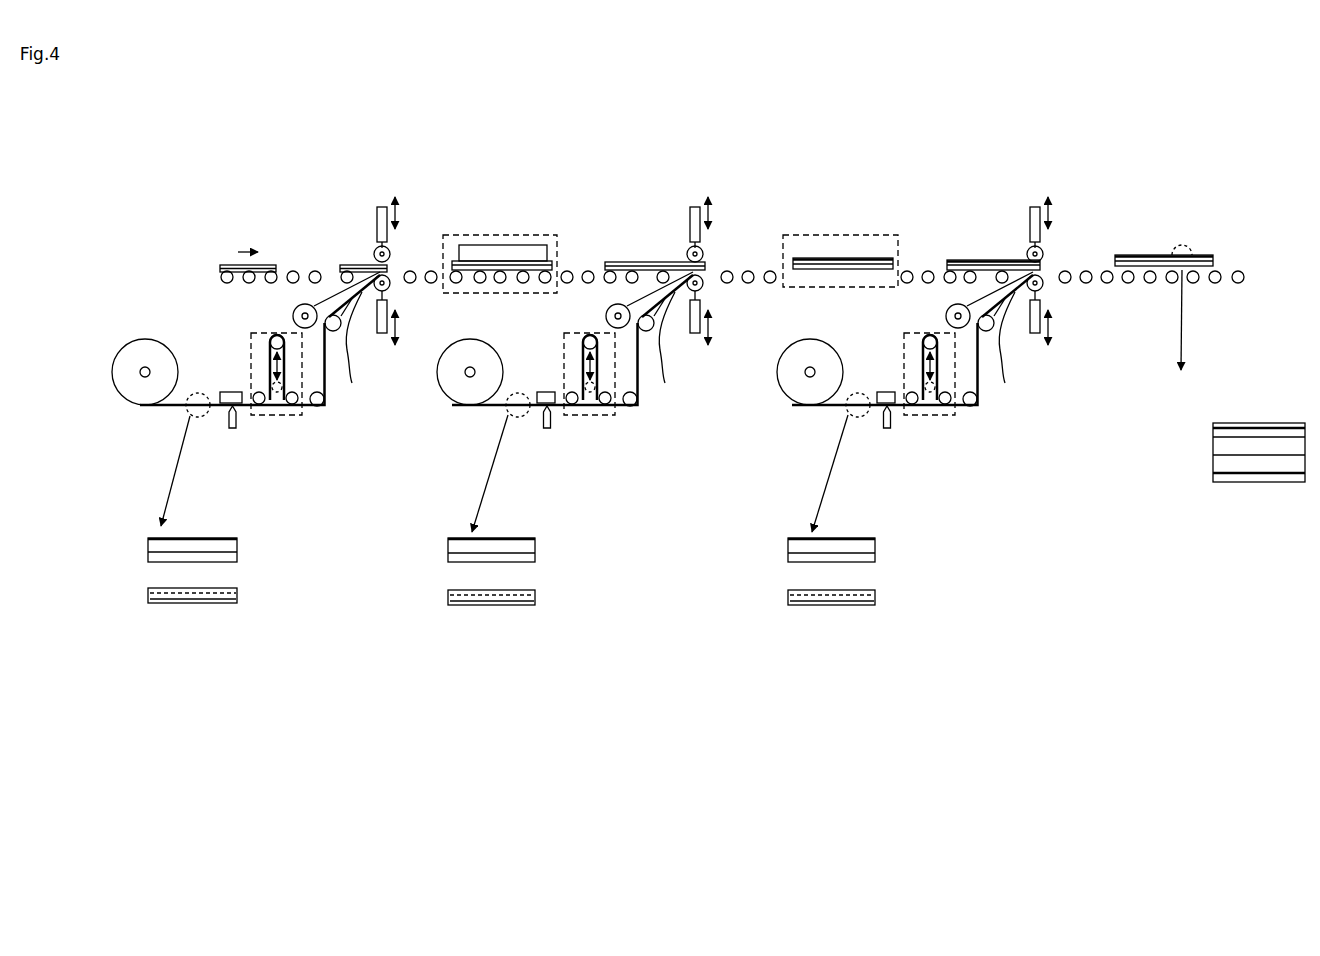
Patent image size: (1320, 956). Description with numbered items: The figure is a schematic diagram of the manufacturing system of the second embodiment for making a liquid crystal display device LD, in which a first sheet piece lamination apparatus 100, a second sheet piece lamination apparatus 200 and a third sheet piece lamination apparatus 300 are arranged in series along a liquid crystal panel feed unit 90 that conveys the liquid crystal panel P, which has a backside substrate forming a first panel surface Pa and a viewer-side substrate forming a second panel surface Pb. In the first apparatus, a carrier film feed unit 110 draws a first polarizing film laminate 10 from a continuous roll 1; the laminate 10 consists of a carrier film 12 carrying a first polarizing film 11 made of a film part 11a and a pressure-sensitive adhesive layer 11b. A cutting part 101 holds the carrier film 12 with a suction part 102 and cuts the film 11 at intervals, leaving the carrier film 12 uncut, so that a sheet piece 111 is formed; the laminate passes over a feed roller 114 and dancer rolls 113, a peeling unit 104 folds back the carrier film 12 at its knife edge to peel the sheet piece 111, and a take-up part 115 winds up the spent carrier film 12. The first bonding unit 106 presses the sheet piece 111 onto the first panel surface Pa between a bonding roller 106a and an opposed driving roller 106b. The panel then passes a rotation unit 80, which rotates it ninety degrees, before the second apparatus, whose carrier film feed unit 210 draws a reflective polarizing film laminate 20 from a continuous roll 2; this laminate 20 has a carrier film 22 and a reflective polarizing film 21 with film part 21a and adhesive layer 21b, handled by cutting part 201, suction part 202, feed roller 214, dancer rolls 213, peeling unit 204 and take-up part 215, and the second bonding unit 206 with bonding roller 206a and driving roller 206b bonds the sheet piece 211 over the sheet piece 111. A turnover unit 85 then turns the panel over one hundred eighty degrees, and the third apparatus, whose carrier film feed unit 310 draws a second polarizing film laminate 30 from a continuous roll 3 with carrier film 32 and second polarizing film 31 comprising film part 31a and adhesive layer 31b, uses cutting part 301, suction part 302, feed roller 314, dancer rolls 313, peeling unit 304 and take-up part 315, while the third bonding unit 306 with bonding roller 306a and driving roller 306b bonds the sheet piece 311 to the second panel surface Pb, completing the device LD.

The continuous roll 1 is at (142, 396).
The continuous roll 2 is at (458, 390).
The continuous roll 3 is at (798, 390).
The first polarizing film laminate 10 is at (190, 417).
The reflective polarizing film laminate 20 is at (510, 417).
The second polarizing film laminate 30 is at (850, 417).
The first polarizing film 11 is at (302, 620).
The reflective polarizing film 21 is at (535, 558).
The second polarizing film 31 is at (875, 558).
The film part 11a is at (238, 600).
The pressure-sensitive adhesive layer 11b is at (238, 591).
The film part 21a is at (535, 602).
The pressure-sensitive adhesive layer 21b is at (535, 593).
The film part 31a is at (875, 602).
The pressure-sensitive adhesive layer 31b is at (875, 593).
The carrier film 12 is at (315, 304).
The carrier film 22 is at (628, 304).
The carrier film 32 is at (968, 304).
The rotation unit 80 is at (490, 235).
The turnover unit 85 is at (833, 235).
The liquid crystal panel feed unit 90 is at (220, 288).
The first sheet piece lamination apparatus 100 is at (130, 490).
The second sheet piece lamination apparatus 200 is at (447, 488).
The third sheet piece lamination apparatus 300 is at (772, 488).
The cutting part 101 is at (237, 421).
The cutting part 201 is at (549, 421).
The cutting part 301 is at (889, 421).
The suction part 102 is at (229, 392).
The suction part 202 is at (541, 392).
The suction part 302 is at (883, 392).
The peeling unit 104 is at (357, 347).
The peeling unit 204 is at (671, 347).
The peeling unit 304 is at (1011, 345).
The first bonding unit 106 is at (368, 345).
The bonding roller 106a is at (396, 288).
The driving roller 106b is at (377, 252).
The second bonding unit 206 is at (681, 345).
The bonding roller 206a is at (709, 288).
The driving roller 206b is at (690, 252).
The third bonding unit 306 is at (1021, 345).
The bonding roller 306a is at (1049, 288).
The driving roller 306b is at (1030, 252).
The carrier film feed unit 110 is at (117, 460).
The carrier film feed unit 210 is at (413, 460).
The carrier film feed unit 310 is at (753, 460).
The sheet piece 111 is at (1213, 437).
The sheet piece 211 is at (1213, 428).
The sheet piece 311 is at (1213, 478).
The dancer rolls 113 is at (252, 346).
The dancer rolls 213 is at (565, 346).
The dancer rolls 313 is at (905, 346).
The feed roller 114 is at (322, 408).
The feed roller 214 is at (637, 410).
The feed roller 314 is at (977, 410).
The take-up part 115 is at (302, 316).
The take-up part 215 is at (615, 316).
The take-up part 315 is at (955, 316).
The liquid crystal display device LD is at (1200, 250).
The liquid crystal panel P is at (1165, 437).
The first panel surface Pa is at (218, 271).
The second panel surface Pb is at (218, 267).